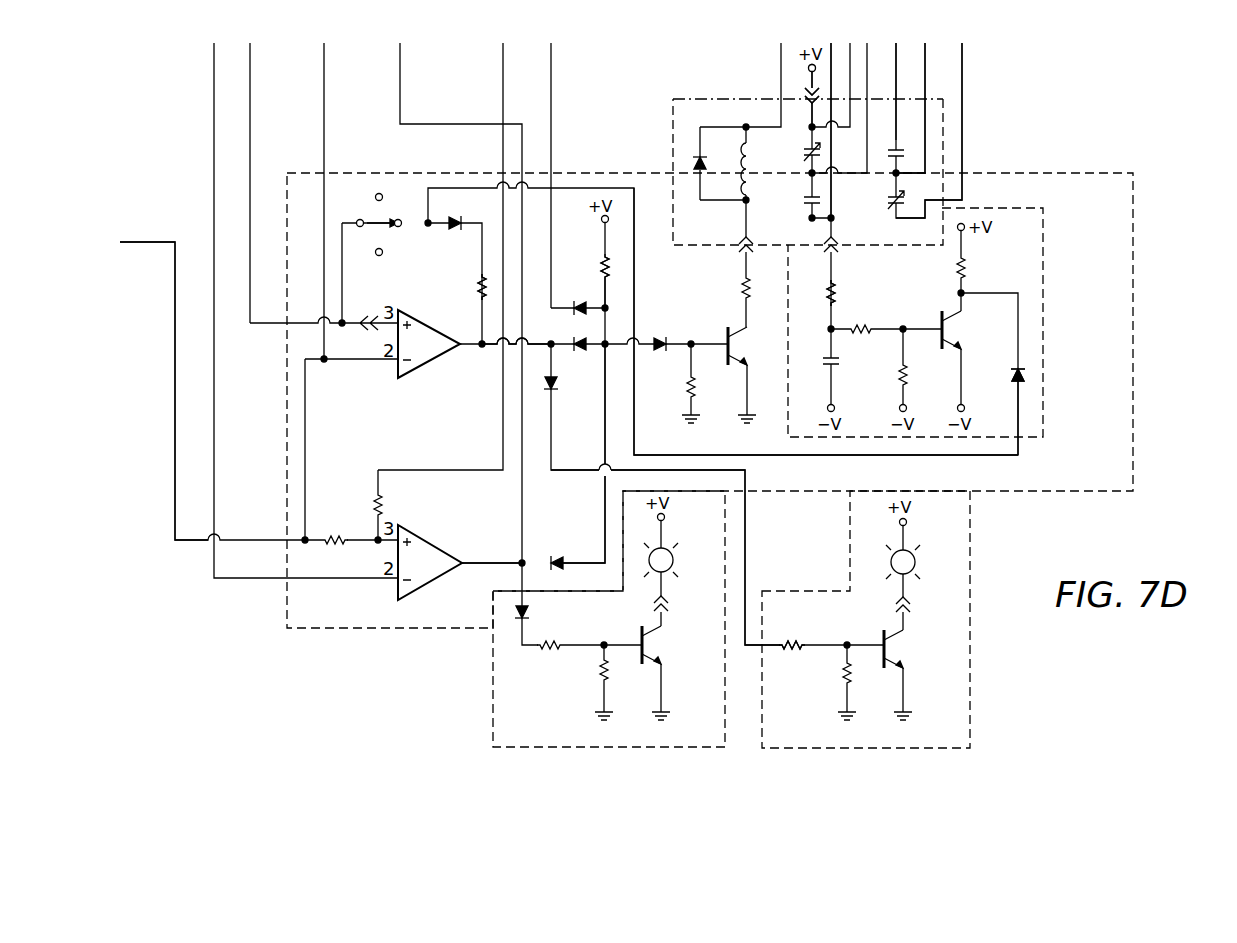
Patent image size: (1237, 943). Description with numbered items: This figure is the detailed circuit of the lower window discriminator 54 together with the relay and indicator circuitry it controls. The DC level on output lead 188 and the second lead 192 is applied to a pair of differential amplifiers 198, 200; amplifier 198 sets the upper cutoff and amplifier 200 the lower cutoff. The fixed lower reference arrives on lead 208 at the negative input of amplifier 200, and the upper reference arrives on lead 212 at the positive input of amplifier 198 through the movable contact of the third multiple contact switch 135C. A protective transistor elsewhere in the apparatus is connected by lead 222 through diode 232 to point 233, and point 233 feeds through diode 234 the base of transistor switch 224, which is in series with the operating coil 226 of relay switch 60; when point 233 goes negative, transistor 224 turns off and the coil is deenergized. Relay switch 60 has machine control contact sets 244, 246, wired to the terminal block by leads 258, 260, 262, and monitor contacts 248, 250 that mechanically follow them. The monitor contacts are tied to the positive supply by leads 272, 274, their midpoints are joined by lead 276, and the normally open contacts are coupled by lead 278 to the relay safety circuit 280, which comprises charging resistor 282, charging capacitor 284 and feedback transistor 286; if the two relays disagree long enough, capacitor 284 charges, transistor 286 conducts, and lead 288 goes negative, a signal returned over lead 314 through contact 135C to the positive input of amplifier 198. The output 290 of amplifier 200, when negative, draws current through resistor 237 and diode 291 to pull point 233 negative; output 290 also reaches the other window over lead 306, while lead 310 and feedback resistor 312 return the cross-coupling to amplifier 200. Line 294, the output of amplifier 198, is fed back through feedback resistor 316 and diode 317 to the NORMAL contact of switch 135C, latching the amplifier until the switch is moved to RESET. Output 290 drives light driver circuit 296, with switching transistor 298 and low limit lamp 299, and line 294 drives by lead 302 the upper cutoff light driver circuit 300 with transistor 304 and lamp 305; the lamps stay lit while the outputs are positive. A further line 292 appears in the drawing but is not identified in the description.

The window discriminator 54 is at (341, 628).
The relay switch 60 is at (708, 248).
The third multiple contact switch 135C is at (401, 209).
The output lead 188 is at (134, 245).
The second lead 192 is at (324, 76).
The differential amplifier 198 is at (440, 356).
The differential amplifier 200 is at (441, 527).
The lead 208 is at (214, 108).
The lead 212 is at (250, 88).
The lead 222 is at (551, 88).
The transistor switch 224 is at (727, 335).
The operating coil 226 is at (748, 165).
The diode 232 is at (581, 285).
The point 233 is at (589, 333).
The diode 234 is at (660, 352).
The resistor 237 is at (605, 262).
The machine control contact set 244 is at (902, 150).
The machine control contact set 246 is at (888, 206).
The monitor contacts 248 is at (805, 152).
The monitor contacts 250 is at (805, 205).
The lead 258 is at (896, 55).
The lead 260 is at (925, 58).
The lead 262 is at (962, 78).
The lead 272 is at (833, 52).
The lead 274 is at (812, 118).
The lead 276 is at (867, 173).
The lead 278 is at (850, 128).
The relay safety circuit 280 is at (1043, 287).
The charging resistor 282 is at (834, 291).
The charging capacitor 284 is at (836, 368).
The feedback transistor 286 is at (940, 320).
The lead 288 is at (1018, 455).
The output lead 290 is at (520, 561).
The diode 291 is at (559, 556).
The line 292 is at (605, 424).
The line 294 is at (544, 344).
The light driver circuit 296 is at (493, 680).
The switching transistor 298 is at (640, 632).
The low limit cutoff lamp 299 is at (669, 553).
The upper cutoff light driver circuit 300 is at (970, 663).
The lead 302 is at (745, 533).
The switching transistor 304 is at (884, 629).
The upper cutoff lamp 305 is at (911, 555).
The lead 306 is at (522, 487).
The lead 310 is at (503, 420).
The feedback resistor 312 is at (375, 494).
The lead 314 is at (343, 290).
The feedback resistor 316 is at (478, 288).
The diode 317 is at (457, 218).